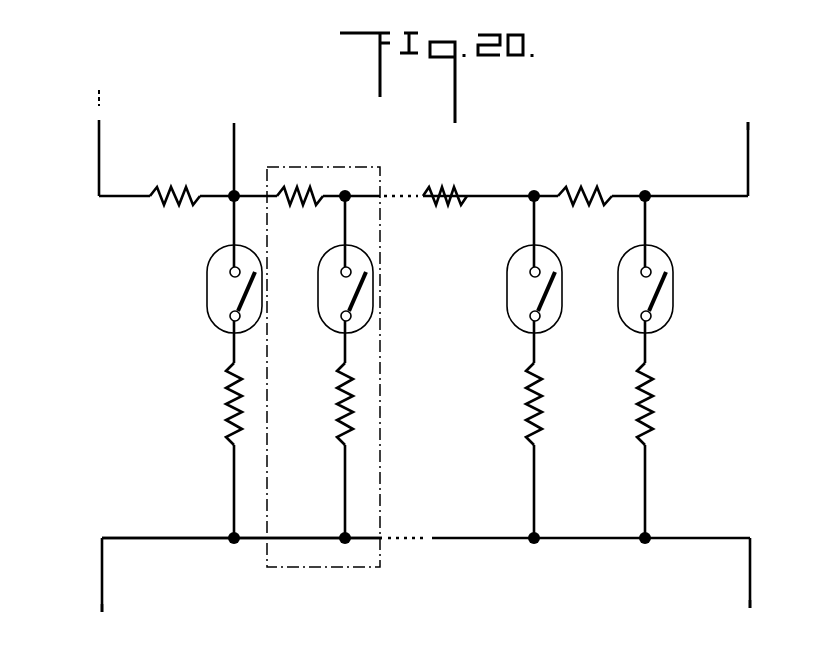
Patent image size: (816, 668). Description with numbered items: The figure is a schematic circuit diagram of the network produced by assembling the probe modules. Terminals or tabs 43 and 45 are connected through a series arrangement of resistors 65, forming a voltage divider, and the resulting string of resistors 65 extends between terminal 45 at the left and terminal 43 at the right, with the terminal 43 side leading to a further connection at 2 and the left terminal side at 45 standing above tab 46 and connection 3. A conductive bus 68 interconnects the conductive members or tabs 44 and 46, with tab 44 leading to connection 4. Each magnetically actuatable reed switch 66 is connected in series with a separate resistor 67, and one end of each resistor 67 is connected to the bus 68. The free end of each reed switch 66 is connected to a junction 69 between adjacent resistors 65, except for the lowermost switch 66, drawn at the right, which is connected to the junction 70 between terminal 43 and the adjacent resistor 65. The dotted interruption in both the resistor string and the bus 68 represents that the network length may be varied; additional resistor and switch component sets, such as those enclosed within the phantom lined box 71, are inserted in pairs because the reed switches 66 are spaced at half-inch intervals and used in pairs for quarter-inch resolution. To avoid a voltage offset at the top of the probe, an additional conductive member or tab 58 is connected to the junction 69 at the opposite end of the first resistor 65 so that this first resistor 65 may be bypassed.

The terminal 2 is at (748, 113).
The terminal 3 is at (102, 622).
The terminal 4 is at (749, 621).
The terminal or tab 43 is at (748, 150).
The conductive member or tab 44 is at (750, 587).
The terminal or tab 45 is at (99, 162).
The conductive member or tab 46 is at (102, 573).
The conductive member or tab 58 is at (232, 143).
The resistor 65 is at (173, 187).
The magnetically actuatable reed switch 66 is at (248, 294).
The resistor 67 is at (340, 410).
The conductive bus 68 is at (287, 542).
The junction 69 is at (231, 199).
The junction 70 is at (646, 190).
The phantom lined box 71 is at (343, 568).